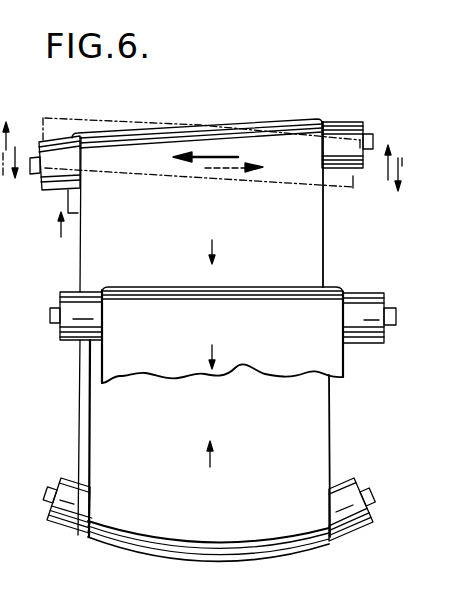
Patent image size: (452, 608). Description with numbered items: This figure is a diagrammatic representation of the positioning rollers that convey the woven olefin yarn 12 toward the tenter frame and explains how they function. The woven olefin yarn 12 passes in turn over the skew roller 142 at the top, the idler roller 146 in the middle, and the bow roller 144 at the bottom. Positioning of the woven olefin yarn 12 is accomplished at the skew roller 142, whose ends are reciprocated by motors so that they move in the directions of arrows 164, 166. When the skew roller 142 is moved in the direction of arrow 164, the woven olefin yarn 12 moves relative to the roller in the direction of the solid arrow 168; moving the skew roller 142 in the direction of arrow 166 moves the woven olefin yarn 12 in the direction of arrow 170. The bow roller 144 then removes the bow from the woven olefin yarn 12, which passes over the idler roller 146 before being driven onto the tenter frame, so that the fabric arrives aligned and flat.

The woven olefin yarn 12 is at (269, 427).
The skew roller 142 is at (352, 122).
The bow roller 144 is at (356, 523).
The idler roller 146 is at (378, 297).
The arrow 164 is at (388, 181).
The arrow 166 is at (402, 162).
The solid arrow 168 is at (208, 155).
The arrow 170 is at (237, 179).